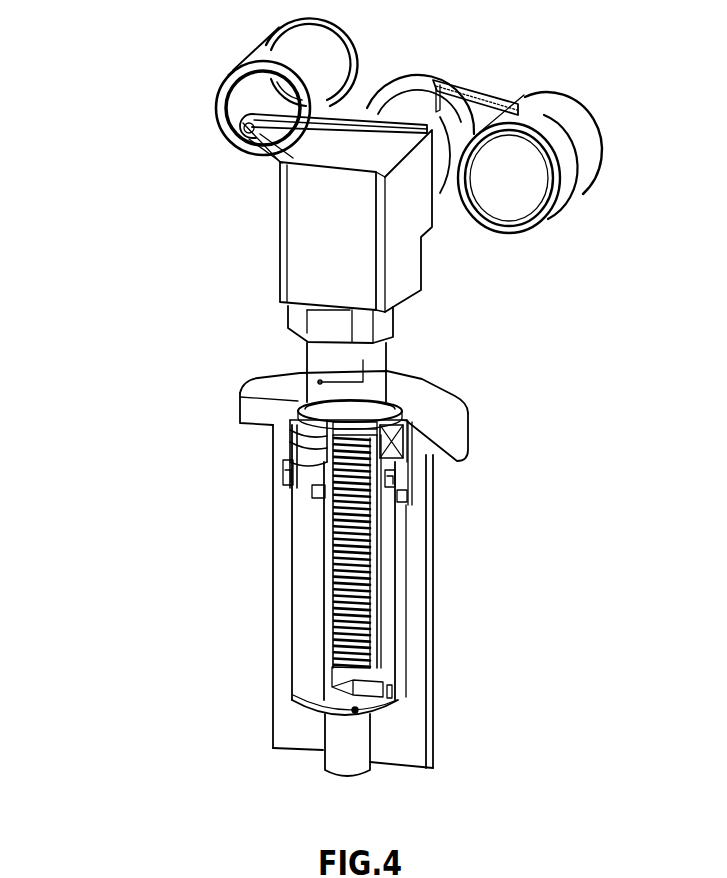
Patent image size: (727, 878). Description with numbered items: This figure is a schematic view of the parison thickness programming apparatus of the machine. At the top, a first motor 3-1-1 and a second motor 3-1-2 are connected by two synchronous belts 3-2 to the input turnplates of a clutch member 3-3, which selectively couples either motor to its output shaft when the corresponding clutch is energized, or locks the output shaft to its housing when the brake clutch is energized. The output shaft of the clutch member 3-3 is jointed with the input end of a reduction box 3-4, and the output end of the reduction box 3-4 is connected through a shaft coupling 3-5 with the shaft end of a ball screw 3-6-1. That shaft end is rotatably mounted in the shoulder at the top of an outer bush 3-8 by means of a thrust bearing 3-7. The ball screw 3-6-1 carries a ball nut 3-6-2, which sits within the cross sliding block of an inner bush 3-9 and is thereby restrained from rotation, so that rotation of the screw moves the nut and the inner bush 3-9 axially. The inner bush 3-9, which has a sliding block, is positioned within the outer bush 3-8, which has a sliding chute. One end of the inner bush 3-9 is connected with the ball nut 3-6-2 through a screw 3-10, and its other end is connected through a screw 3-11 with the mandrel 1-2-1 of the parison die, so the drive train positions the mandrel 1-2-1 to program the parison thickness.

The first motor 3-1-1 is at (535, 112).
The second motor 3-1-2 is at (255, 95).
The synchronous belts 3-2 is at (313, 113).
The clutch member 3-3 is at (457, 123).
The reduction box 3-4 is at (400, 257).
The shaft coupling 3-5 is at (348, 400).
The thrust bearing 3-7 is at (420, 457).
The outer bush 3-8 is at (282, 663).
The inner bush 3-9 is at (390, 638).
The screw 3-10 is at (393, 487).
The screw 3-11 is at (403, 698).
The ball screw 3-6-1 is at (373, 525).
The ball nut 3-6-2 is at (378, 555).
The mandrel 1-2-1 is at (297, 725).